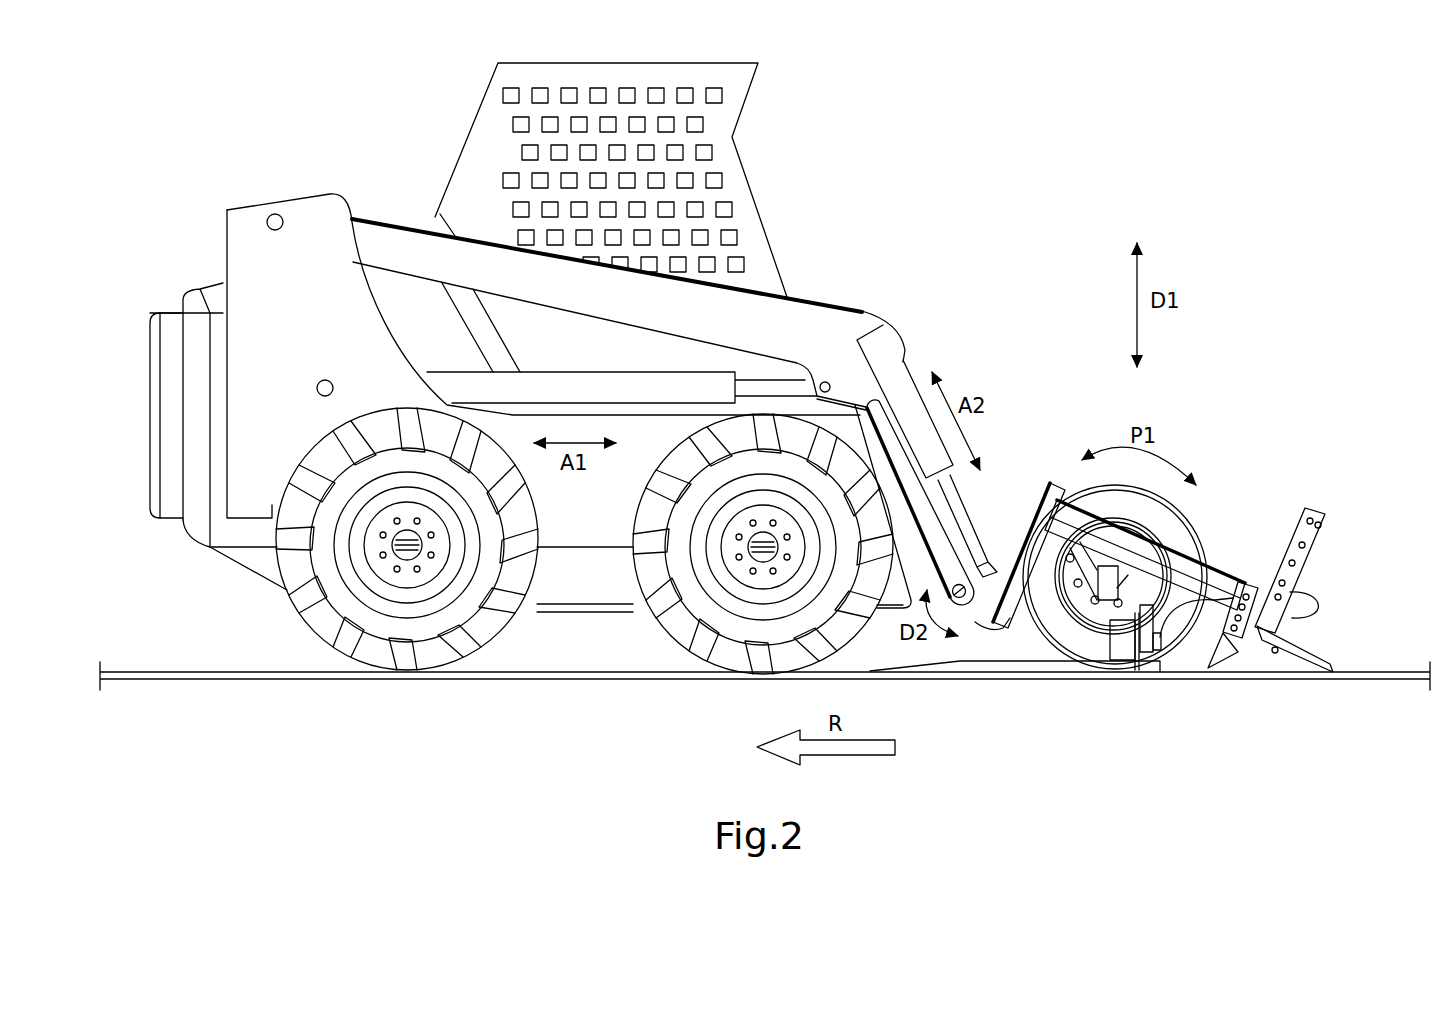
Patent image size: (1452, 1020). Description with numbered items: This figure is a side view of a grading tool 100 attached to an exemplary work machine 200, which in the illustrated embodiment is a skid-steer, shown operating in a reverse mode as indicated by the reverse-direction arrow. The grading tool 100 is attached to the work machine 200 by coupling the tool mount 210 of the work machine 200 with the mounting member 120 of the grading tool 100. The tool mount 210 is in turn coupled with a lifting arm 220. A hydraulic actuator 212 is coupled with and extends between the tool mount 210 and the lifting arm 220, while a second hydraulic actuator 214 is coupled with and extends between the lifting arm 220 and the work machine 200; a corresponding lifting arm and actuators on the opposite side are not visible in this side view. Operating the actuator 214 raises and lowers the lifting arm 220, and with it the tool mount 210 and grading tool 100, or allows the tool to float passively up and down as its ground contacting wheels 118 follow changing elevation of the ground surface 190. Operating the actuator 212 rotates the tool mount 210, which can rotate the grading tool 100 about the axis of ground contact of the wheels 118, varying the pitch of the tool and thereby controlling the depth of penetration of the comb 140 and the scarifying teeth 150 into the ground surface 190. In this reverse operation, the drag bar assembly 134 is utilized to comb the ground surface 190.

The work machine 200 is at (362, 148).
The lifting arm 220 is at (822, 316).
The actuator 212 is at (905, 365).
The actuator 214 is at (648, 404).
The tool mount 210 is at (994, 567).
The grading tool 100 is at (1362, 489).
The mounting member 120 is at (1008, 533).
The wheels 118 is at (1193, 538).
The drag bar assembly 134 is at (1146, 662).
The scarifying teeth 150 is at (1225, 657).
The comb 140 is at (1301, 665).
The ground surface 190 is at (1080, 665).